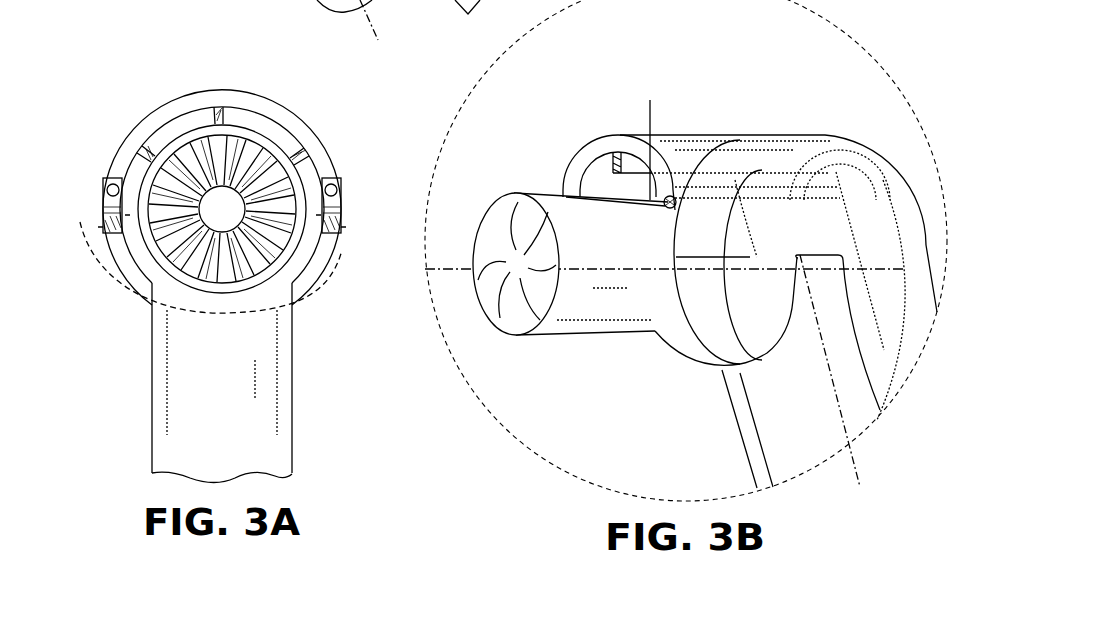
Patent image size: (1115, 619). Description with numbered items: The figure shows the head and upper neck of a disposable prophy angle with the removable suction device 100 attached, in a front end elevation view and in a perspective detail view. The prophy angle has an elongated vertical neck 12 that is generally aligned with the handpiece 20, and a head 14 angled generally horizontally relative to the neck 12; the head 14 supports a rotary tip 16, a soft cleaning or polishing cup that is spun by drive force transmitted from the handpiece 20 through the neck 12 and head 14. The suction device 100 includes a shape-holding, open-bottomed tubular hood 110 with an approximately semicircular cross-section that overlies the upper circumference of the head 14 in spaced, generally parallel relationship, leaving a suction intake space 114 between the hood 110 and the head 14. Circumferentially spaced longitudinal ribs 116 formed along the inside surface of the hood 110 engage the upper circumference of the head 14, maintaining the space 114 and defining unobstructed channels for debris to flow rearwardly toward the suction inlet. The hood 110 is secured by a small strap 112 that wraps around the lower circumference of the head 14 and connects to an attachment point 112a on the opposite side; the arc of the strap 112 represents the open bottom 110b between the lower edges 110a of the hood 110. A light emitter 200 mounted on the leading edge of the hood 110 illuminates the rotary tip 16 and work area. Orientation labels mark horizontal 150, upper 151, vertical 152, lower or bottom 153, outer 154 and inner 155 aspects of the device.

In FIG. 3A, the neck 12 is at (280, 420).
In FIG. 3B, the neck 12 is at (747, 429).
In FIG. 3A, the head 14 is at (304, 247).
In FIG. 3A, the rotary tip 16 is at (180, 270).
In FIG. 3B, the rotary tip 16 is at (585, 315).
In FIG. 3A, the handpiece 20 is at (298, 0).
In FIG. 3A, the suction device 100 is at (160, 86).
In FIG. 3B, the suction device 100 is at (766, 95).
In FIG. 3A, the hood 110 is at (253, 103).
In FIG. 3B, the hood 110 is at (714, 153).
In FIG. 3A, the lower edges 110a is at (105, 226).
In FIG. 3B, the lower edges 110a is at (838, 332).
In FIG. 3A, the open bottom 110b is at (132, 256).
In FIG. 3A, the strap 112 is at (294, 275).
In FIG. 3A, the attachment point 112a is at (105, 228).
In FIG. 3A, the suction intake space 114 is at (267, 130).
In FIG. 3B, the suction intake space 114 is at (572, 190).
In FIG. 3A, the ribs 116 is at (137, 146).
In FIG. 3B, the ribs 116 is at (620, 152).
In FIG. 3B, the horizontal 150 is at (489, 268).
In FIG. 3B, the upper 151 is at (609, 44).
In FIG. 3B, the vertical 152 is at (386, 9).
In FIG. 3B, the lower or bottom 153 is at (598, 414).
In FIG. 3B, the outer 154 is at (490, 342).
In FIG. 3B, the inner 155 is at (681, 325).
In FIG. 3A, the light emitter 200 is at (116, 182).
In FIG. 3B, the light emitter 200 is at (567, 200).